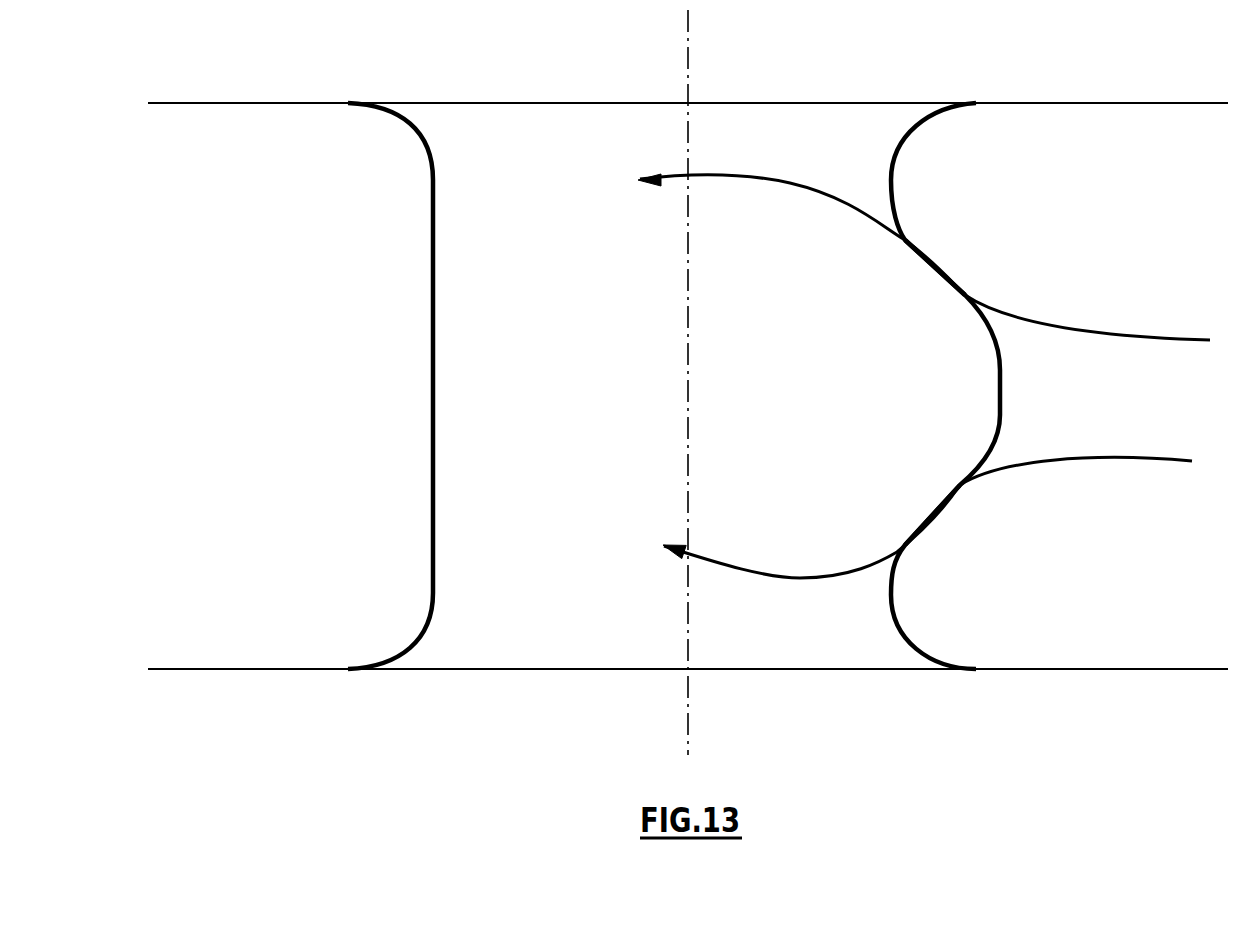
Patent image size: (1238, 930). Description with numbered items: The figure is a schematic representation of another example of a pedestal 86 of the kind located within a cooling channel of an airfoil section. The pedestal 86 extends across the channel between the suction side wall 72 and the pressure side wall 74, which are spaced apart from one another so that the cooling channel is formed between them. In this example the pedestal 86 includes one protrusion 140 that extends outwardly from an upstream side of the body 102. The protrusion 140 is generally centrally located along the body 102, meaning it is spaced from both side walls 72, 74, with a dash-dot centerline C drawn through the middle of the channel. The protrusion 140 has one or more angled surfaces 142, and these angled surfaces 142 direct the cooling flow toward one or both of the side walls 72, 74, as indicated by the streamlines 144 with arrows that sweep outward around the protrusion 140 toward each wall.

The suction side wall 72 is at (1015, 103).
The pressure side wall 74 is at (1058, 669).
The pedestal 86 is at (460, 392).
The body 102 is at (545, 175).
The protrusion 140 is at (920, 425).
The angled surfaces 142 is at (905, 277).
The streamlines 144 is at (790, 183).
The centerline C is at (688, 75).